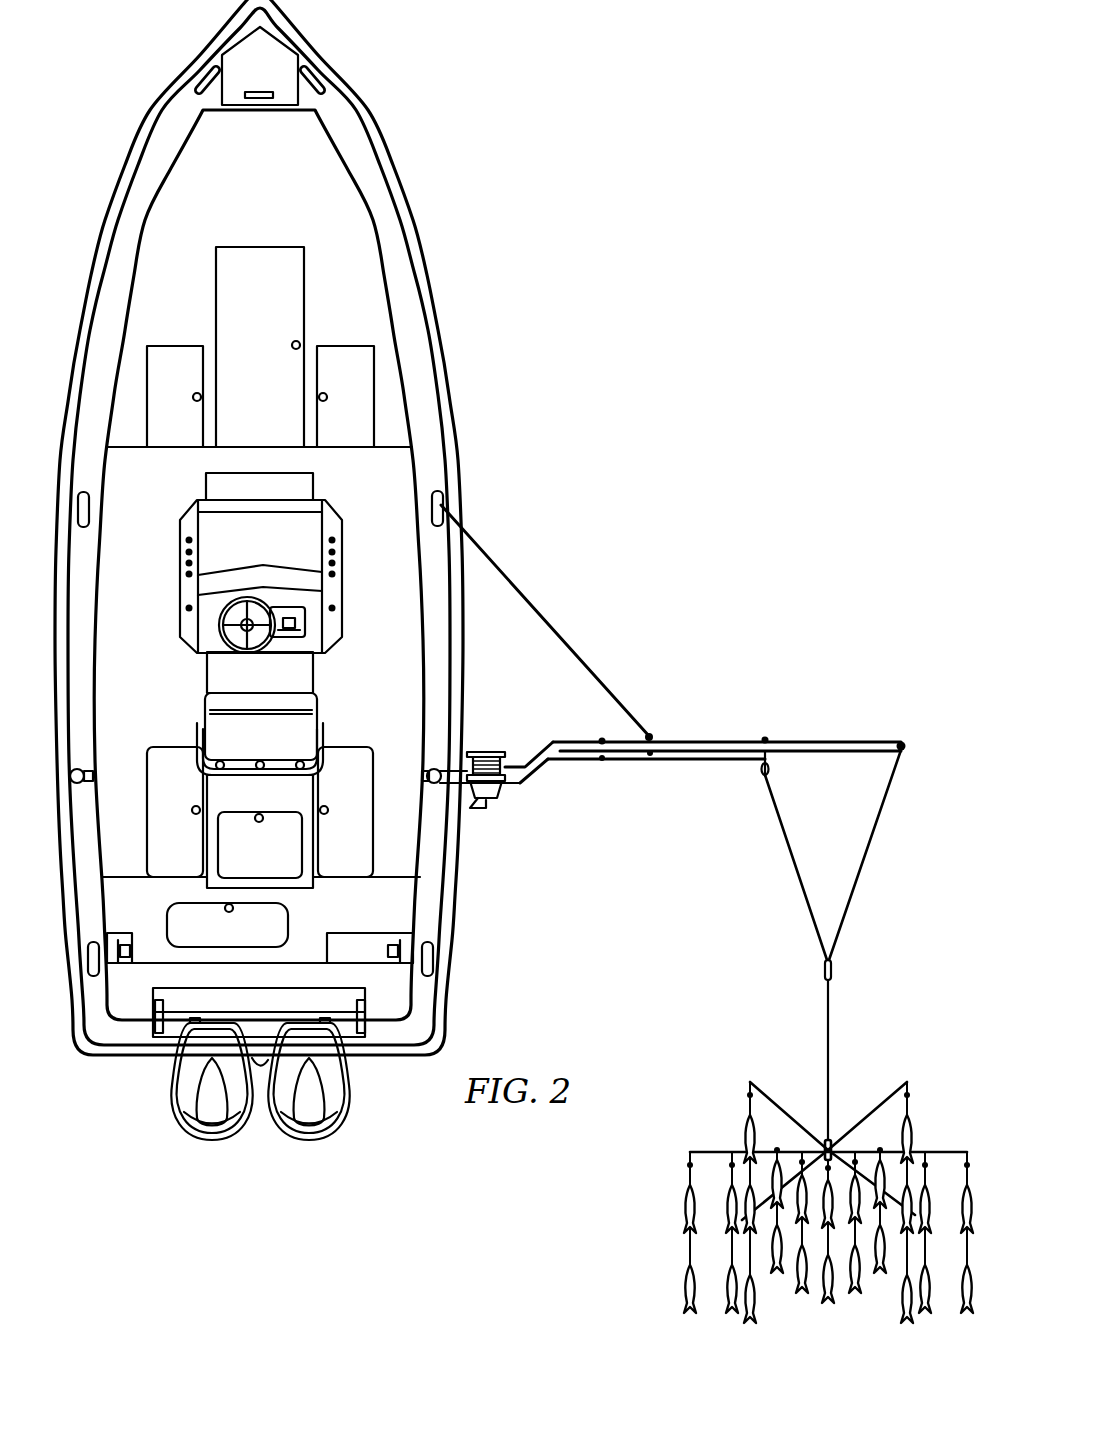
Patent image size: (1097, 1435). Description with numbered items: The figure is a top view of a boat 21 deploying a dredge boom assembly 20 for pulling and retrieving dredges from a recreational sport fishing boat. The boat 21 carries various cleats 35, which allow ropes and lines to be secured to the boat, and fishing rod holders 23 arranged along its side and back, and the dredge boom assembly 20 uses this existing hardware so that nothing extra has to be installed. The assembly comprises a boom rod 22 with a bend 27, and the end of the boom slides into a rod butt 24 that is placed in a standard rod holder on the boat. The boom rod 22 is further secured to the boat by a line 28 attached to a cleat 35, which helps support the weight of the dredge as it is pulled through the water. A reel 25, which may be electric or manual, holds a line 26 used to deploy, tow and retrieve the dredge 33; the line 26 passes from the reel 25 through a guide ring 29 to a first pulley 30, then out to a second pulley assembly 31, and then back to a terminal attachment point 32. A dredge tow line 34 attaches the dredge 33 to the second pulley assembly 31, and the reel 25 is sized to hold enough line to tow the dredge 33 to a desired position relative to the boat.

The dredge boom assembly 20 is at (752, 668).
The boat 21 is at (470, 238).
The boom rod 22 is at (718, 741).
The fishing rod holders 23 is at (100, 768).
The rod butt 24 is at (455, 786).
The reel 25 is at (500, 790).
The line 26 is at (573, 762).
The bend 27 is at (538, 748).
The line 28 is at (548, 617).
The guide ring 29 is at (602, 762).
The first pulley 30 is at (776, 769).
The second pulley assembly 31 is at (822, 978).
The terminal attachment point 32 is at (905, 742).
The dredge 33 is at (725, 1150).
The dredge tow line 34 is at (825, 1068).
The cleats 35 is at (88, 520).